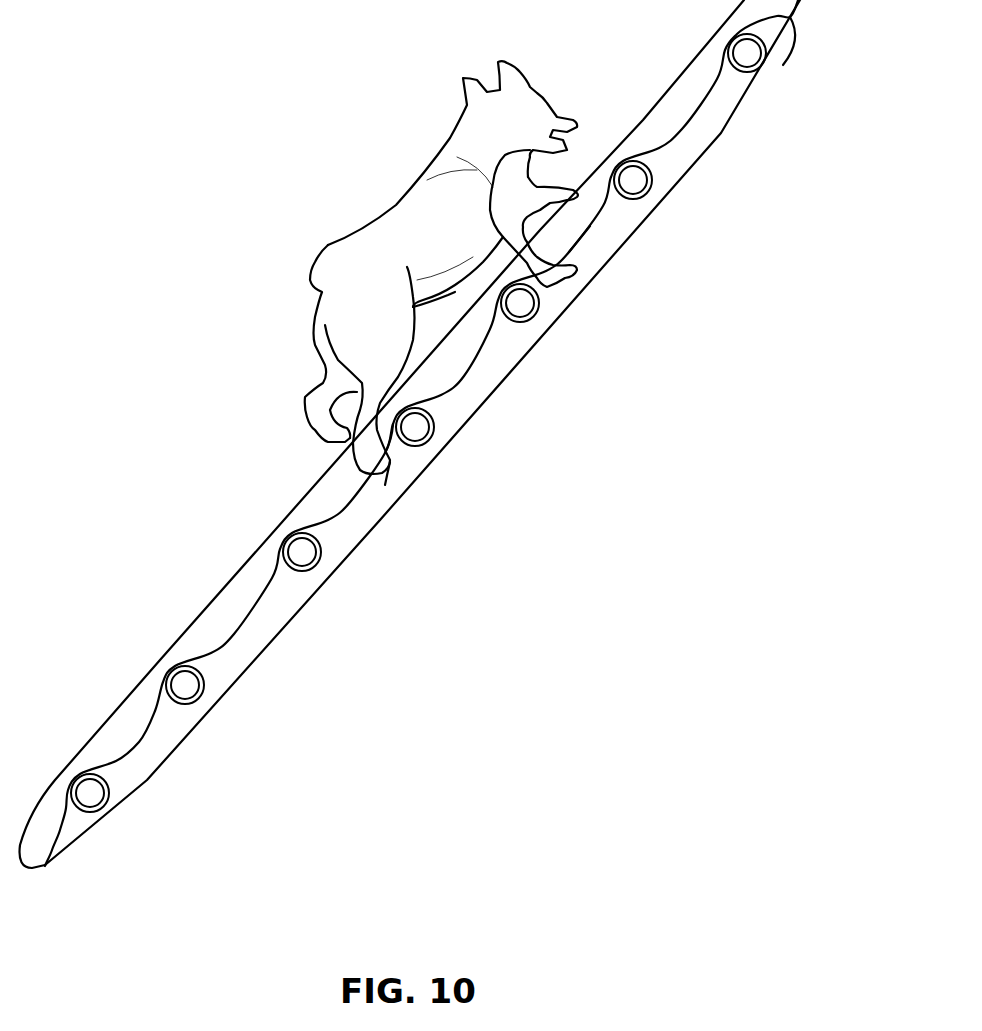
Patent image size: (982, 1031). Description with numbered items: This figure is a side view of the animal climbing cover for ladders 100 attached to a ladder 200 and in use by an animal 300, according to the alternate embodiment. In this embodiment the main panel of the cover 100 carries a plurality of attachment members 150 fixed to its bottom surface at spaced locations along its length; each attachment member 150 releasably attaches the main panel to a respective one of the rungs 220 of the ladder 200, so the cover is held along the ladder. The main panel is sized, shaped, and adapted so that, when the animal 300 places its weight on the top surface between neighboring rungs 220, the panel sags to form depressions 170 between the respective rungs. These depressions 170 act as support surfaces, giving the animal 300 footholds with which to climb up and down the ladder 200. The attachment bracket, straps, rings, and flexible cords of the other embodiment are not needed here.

The animal climbing cover for ladders 100 is at (250, 615).
The attachment members 150 is at (96, 813).
The depressions 170 is at (598, 264).
The ladder 200 is at (729, 140).
The rungs 220 is at (109, 793).
The animal 300 is at (388, 190).